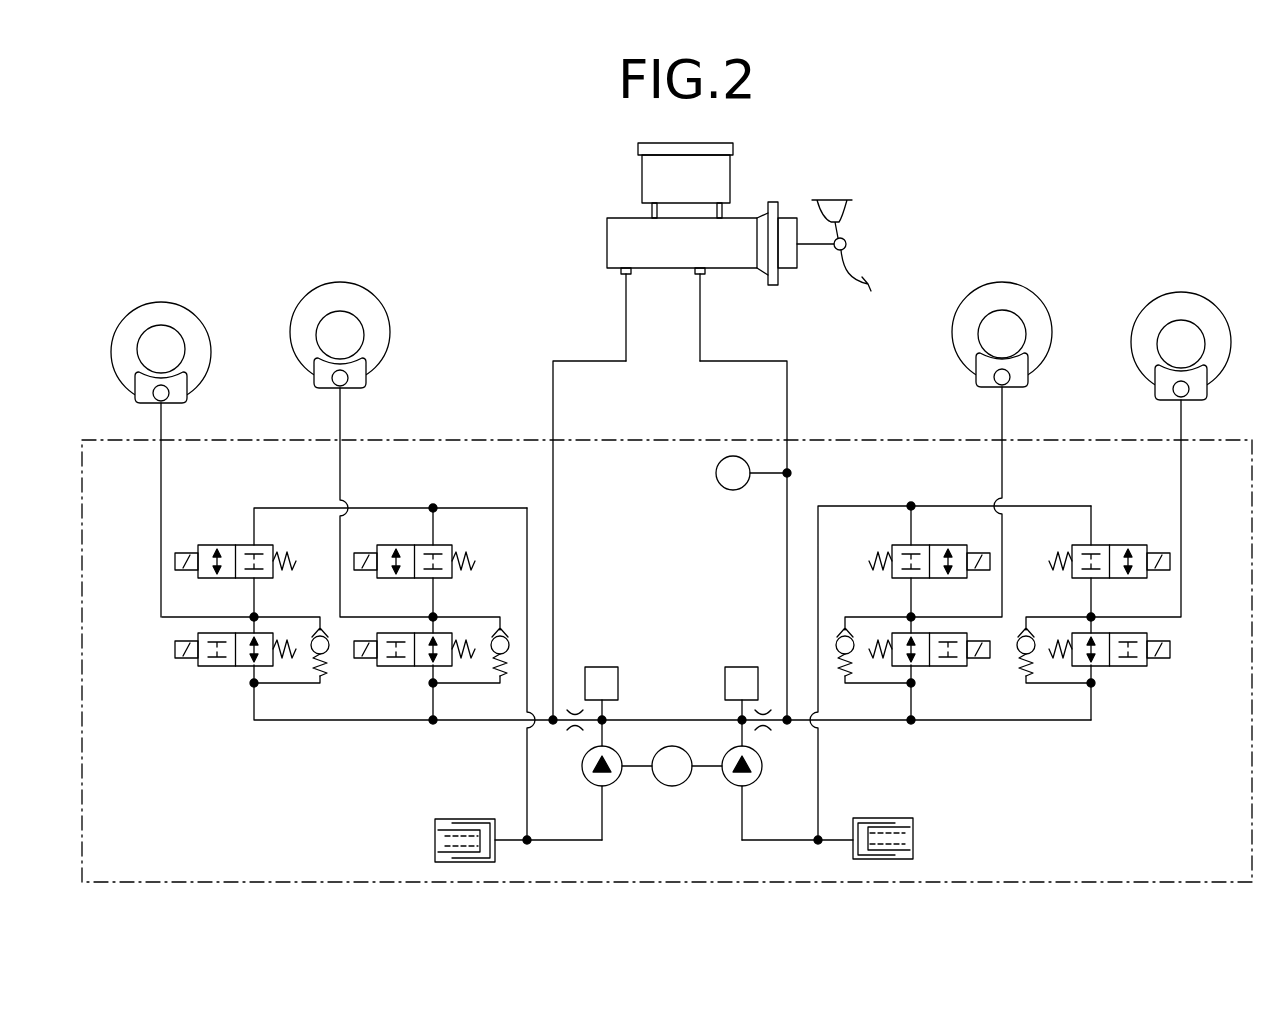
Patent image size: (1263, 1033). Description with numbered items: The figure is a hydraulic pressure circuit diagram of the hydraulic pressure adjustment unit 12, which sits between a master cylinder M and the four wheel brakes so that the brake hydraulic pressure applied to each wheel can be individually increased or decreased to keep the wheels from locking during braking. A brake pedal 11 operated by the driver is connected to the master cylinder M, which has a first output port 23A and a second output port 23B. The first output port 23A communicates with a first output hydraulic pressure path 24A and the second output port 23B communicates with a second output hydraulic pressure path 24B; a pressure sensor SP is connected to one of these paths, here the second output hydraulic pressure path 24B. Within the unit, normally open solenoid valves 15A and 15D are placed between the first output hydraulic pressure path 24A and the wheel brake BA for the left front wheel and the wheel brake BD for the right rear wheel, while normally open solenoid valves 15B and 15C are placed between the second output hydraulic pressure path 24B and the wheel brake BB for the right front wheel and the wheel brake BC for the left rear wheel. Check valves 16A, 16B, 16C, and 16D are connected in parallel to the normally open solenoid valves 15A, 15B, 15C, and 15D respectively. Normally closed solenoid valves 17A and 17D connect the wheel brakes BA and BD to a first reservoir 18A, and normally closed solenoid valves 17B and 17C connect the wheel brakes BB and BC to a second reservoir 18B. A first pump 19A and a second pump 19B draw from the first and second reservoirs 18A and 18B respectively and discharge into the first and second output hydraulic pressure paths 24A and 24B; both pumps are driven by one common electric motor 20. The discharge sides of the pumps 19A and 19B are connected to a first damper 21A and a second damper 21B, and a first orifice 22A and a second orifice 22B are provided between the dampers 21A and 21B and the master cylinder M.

The master cylinder M is at (622, 242).
The brake pedal 11 is at (858, 266).
The first output port 23A is at (622, 276).
The second output port 23B is at (700, 276).
The first output hydraulic pressure path 24A is at (550, 407).
The second output hydraulic pressure path 24B is at (790, 400).
The wheel brake BA is at (141, 291).
The wheel brake BD is at (343, 282).
The wheel brake BC is at (1002, 279).
The wheel brake BB is at (1171, 288).
The hydraulic pressure adjustment unit 12 is at (392, 440).
The pressure sensor SP is at (729, 487).
The normally closed solenoid valve 17A is at (211, 544).
The normally closed solenoid valve 17B is at (1118, 543).
The normally closed solenoid valve 17C is at (925, 544).
The normally closed solenoid valve 17D is at (445, 544).
The check valve 16A is at (336, 652).
The check valve 16B is at (1013, 653).
The check valve 16C is at (828, 652).
The check valve 16D is at (515, 653).
The normally open solenoid valve 15A is at (228, 668).
The normally open solenoid valve 15B is at (1120, 666).
The normally open solenoid valve 15C is at (940, 667).
The normally open solenoid valve 15D is at (407, 668).
The first damper 21A is at (605, 670).
The second damper 21B is at (727, 682).
The first pump 19A is at (617, 750).
The second pump 19B is at (724, 749).
The electric motor 20 is at (673, 783).
The first orifice 22A is at (577, 732).
The second orifice 22B is at (765, 727).
The first reservoir 18A is at (470, 813).
The second reservoir 18B is at (887, 811).